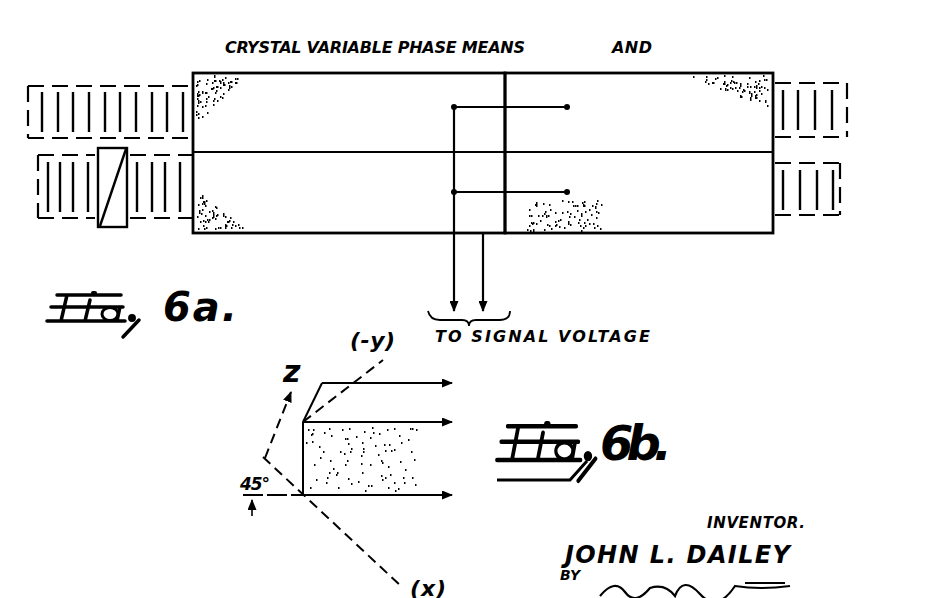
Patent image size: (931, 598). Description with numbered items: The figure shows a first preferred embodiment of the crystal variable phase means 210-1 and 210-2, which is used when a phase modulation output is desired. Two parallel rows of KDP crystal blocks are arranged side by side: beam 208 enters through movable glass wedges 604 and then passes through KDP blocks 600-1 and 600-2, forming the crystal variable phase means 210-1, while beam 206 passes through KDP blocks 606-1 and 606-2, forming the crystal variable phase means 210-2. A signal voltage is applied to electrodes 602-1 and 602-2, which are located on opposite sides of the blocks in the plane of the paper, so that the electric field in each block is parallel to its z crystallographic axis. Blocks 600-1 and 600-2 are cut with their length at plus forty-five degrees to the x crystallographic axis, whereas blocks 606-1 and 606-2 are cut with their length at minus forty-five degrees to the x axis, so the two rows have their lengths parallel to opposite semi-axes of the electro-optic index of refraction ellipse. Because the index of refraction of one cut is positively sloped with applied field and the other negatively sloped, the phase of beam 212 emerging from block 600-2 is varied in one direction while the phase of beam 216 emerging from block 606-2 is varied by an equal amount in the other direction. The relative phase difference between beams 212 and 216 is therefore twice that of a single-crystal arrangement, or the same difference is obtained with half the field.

The beam 206 is at (100, 83).
The beam 208 is at (58, 219).
The wedges 604 is at (117, 228).
The KDP block 606-1 is at (203, 72).
The KDP block 606-2 is at (738, 80).
The electrodes 602-1 is at (230, 220).
The electrodes 602-2 is at (558, 223).
The KDP block 600-1 is at (350, 233).
The KDP block 600-2 is at (657, 234).
The beam 216 is at (802, 82).
The beam 212 is at (815, 216).
The crystal variable phase means 210-1 is at (398, 135).
The crystal variable phase means 210-2 is at (639, 135).